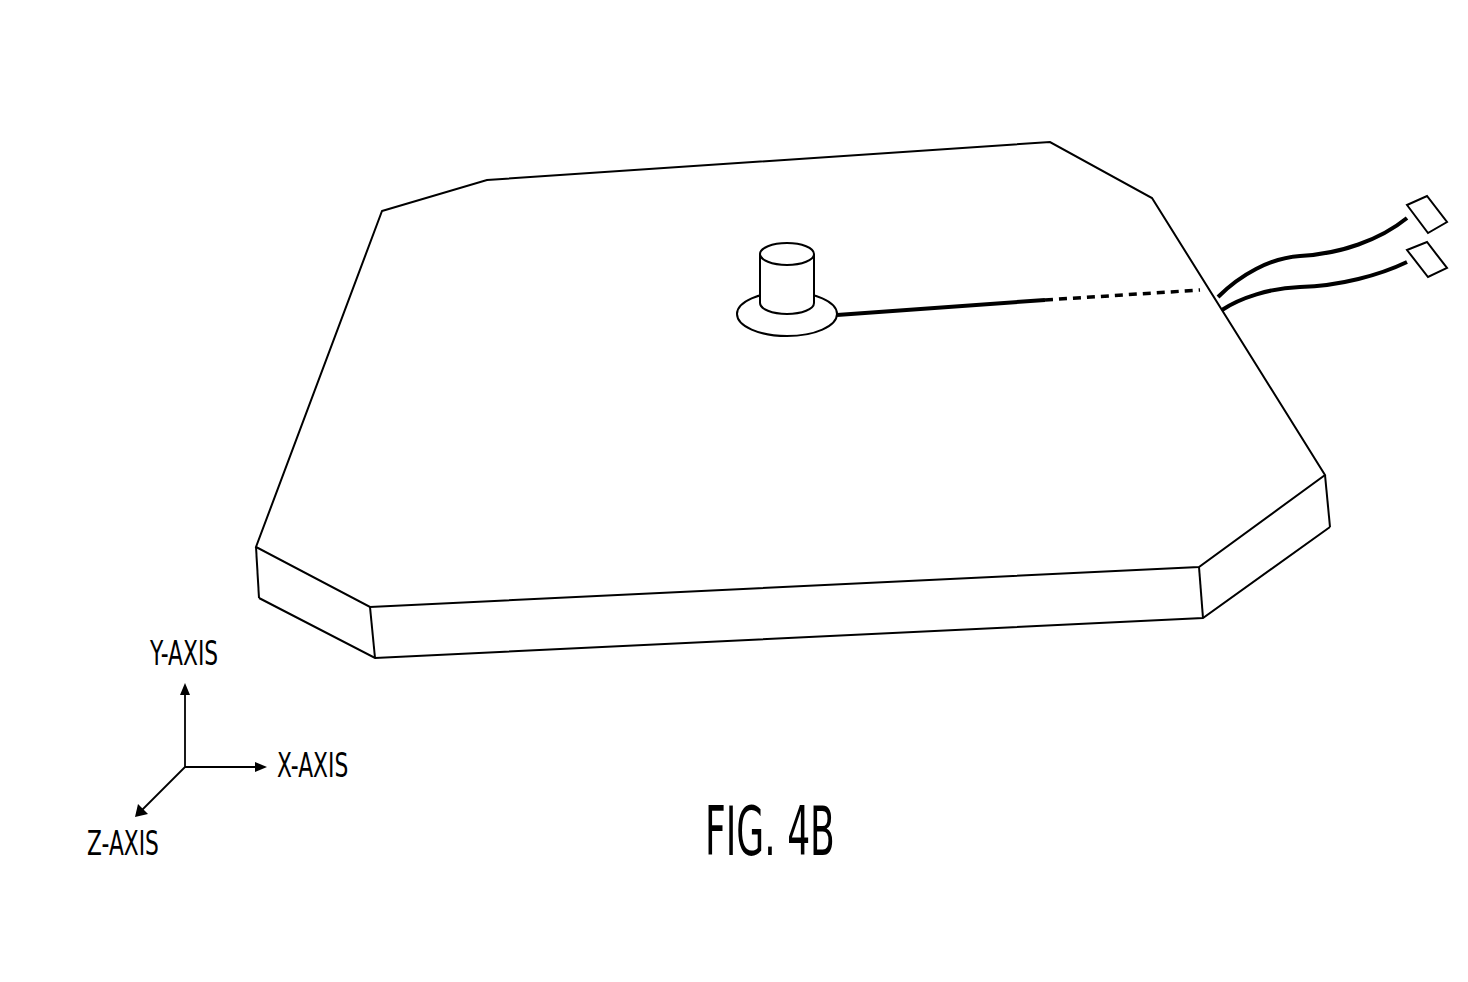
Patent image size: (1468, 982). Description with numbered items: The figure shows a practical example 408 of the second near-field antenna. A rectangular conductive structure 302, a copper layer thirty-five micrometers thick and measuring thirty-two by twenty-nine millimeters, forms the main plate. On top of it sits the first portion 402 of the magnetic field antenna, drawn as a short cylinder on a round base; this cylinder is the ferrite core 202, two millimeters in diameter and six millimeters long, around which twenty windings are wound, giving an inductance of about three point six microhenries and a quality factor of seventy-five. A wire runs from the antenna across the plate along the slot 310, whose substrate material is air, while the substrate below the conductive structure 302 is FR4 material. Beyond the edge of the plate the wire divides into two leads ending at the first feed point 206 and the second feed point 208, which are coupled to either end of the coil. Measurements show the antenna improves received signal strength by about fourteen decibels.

The practical example 408 is at (236, 113).
The conductive structure 302 is at (807, 483).
The first portion 402 is at (729, 290).
The dielectric core 202 is at (787, 246).
The slot 310 is at (903, 297).
The first feed point 206 is at (1440, 200).
The second feed point 208 is at (1423, 277).